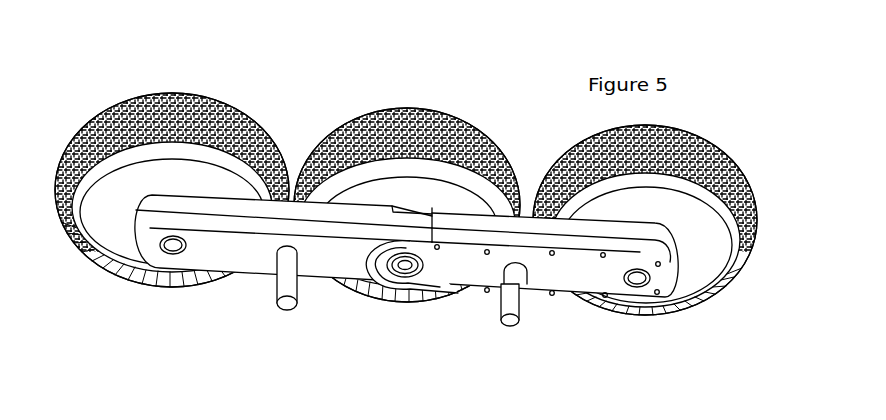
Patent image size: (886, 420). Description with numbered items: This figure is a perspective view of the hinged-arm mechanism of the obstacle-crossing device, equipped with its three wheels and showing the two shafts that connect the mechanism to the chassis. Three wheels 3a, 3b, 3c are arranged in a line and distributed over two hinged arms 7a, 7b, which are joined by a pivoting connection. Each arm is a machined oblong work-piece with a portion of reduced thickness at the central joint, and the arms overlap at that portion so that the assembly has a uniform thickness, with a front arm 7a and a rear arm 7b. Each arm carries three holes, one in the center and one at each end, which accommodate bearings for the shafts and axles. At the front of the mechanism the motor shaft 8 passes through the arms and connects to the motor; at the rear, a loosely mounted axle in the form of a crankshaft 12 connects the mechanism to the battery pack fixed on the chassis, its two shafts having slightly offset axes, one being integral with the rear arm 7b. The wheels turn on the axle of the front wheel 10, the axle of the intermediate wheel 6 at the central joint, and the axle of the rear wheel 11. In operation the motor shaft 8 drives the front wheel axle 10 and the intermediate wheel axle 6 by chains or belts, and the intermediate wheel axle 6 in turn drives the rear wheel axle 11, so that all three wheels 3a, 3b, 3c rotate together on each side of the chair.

The front wheel 3a is at (183, 92).
The intermediate wheel 3b is at (440, 103).
The rear wheel 3c is at (697, 128).
The axle of the intermediate wheel 6 is at (426, 268).
The front arm 7a is at (235, 258).
The rear arm 7b is at (568, 282).
The motor shaft 8 is at (297, 292).
The axle of the front wheel 10 is at (173, 256).
The axle of the rear wheel 11 is at (638, 289).
The crankshaft 12 is at (518, 308).